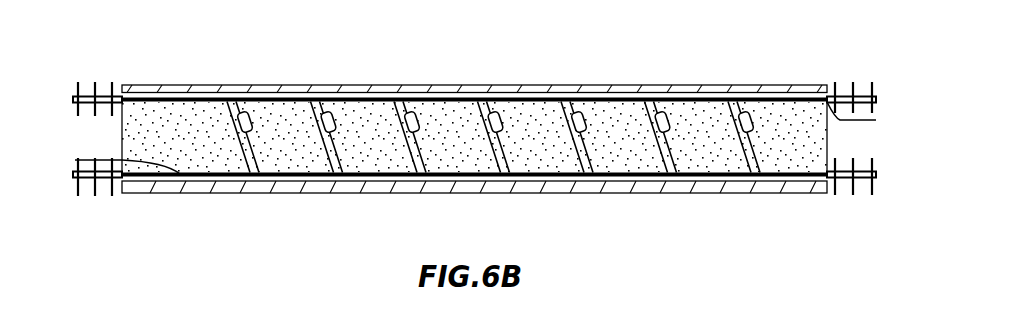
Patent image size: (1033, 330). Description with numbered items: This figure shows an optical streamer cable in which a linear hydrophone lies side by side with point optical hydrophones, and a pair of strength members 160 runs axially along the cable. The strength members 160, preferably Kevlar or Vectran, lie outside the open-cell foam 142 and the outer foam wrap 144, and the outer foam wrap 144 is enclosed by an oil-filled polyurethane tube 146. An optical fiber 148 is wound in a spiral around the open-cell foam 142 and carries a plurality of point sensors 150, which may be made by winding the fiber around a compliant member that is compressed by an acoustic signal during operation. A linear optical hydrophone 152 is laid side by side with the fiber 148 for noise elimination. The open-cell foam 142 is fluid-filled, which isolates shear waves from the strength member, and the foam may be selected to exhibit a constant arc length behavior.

The open-cell foam 142 is at (627, 120).
The outer foam wrap 144 is at (352, 85).
The oil-filled polyurethane tube 146 is at (211, 85).
The optical fiber 148 is at (499, 167).
The point sensors 150 is at (743, 99).
The linear optical hydrophone 152 is at (243, 160).
The strength members 160 is at (88, 92).